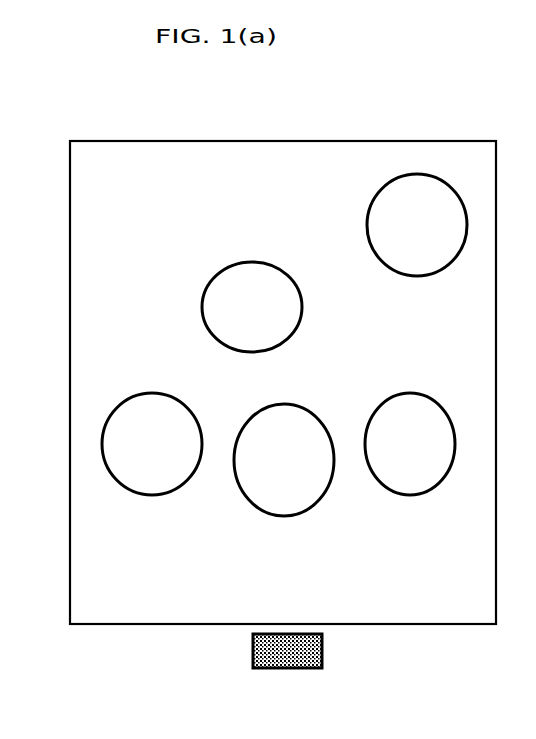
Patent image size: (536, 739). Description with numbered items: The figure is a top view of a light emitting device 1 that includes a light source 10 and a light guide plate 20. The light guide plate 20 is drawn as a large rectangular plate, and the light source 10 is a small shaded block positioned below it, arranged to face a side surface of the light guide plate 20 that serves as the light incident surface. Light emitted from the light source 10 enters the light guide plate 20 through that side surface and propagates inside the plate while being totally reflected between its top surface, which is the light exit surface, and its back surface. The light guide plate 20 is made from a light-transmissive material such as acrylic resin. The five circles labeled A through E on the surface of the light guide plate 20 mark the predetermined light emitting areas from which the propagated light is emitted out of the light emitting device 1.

The light emitting device 1 is at (175, 657).
The light source 10 is at (322, 655).
The light guide plate 20 is at (435, 614).